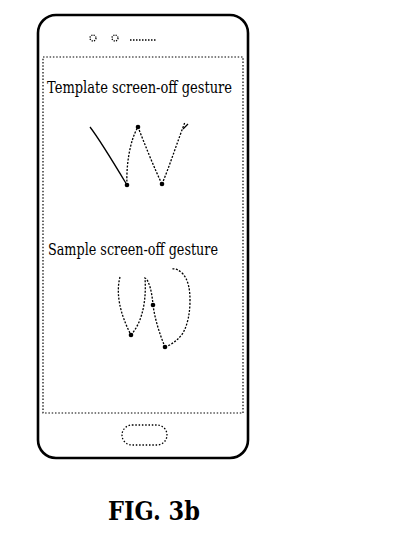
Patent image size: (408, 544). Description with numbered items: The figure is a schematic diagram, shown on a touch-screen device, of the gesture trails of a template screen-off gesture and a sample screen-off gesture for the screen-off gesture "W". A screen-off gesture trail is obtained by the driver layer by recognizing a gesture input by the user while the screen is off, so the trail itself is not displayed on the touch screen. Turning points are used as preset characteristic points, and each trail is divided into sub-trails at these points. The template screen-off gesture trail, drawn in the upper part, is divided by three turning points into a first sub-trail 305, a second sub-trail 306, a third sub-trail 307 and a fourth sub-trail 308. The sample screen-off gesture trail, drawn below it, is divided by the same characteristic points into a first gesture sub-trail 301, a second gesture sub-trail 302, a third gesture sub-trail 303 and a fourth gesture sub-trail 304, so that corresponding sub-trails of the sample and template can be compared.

The first gesture sub-trail 301 is at (117, 307).
The second gesture sub-trail 302 is at (145, 278).
The third gesture sub-trail 303 is at (160, 342).
The fourth gesture sub-trail 304 is at (186, 294).
The first sub-trail 305 is at (106, 152).
The second sub-trail 306 is at (135, 127).
The third sub-trail 307 is at (156, 180).
The fourth sub-trail 308 is at (180, 129).